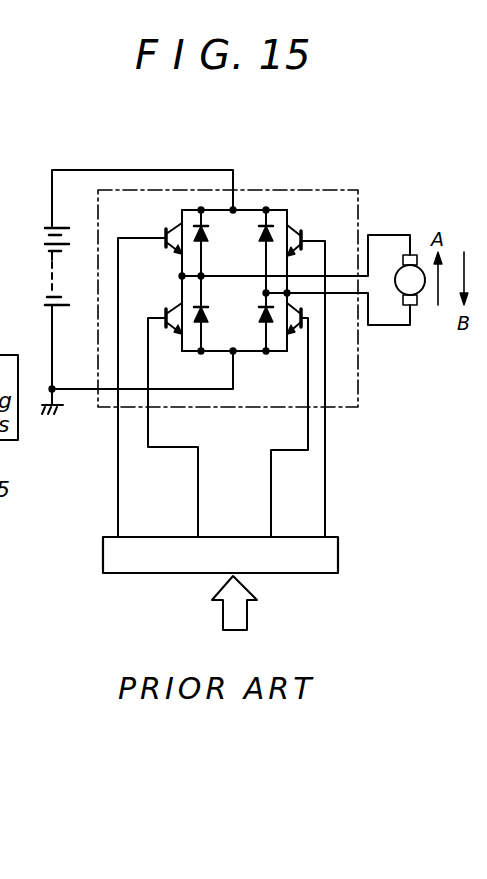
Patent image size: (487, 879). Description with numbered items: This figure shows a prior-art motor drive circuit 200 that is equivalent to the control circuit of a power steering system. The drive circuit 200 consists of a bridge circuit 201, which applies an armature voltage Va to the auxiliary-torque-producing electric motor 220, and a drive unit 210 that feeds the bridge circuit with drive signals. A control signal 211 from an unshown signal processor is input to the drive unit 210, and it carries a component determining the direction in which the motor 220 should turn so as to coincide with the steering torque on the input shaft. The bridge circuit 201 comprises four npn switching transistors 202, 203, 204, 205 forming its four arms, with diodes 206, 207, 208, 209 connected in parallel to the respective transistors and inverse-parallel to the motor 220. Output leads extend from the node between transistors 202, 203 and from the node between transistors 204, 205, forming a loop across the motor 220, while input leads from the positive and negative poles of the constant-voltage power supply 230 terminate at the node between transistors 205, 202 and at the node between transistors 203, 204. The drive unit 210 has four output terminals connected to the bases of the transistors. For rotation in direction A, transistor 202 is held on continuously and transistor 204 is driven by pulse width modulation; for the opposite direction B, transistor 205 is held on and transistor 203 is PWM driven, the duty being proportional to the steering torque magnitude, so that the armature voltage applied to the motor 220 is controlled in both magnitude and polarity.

The motor drive circuit 200 is at (318, 129).
The bridge circuit 201 is at (295, 188).
The switching transistor 202 is at (299, 227).
The switching transistor 203 is at (298, 337).
The switching transistor 204 is at (164, 308).
The switching transistor 205 is at (164, 226).
The diode 206 is at (259, 236).
The diode 207 is at (258, 317).
The diode 208 is at (224, 306).
The diode 209 is at (210, 226).
The drive unit 210 is at (340, 560).
The control signal 211 is at (248, 608).
The electric motor 220 is at (420, 293).
The power supply 230 is at (50, 224).